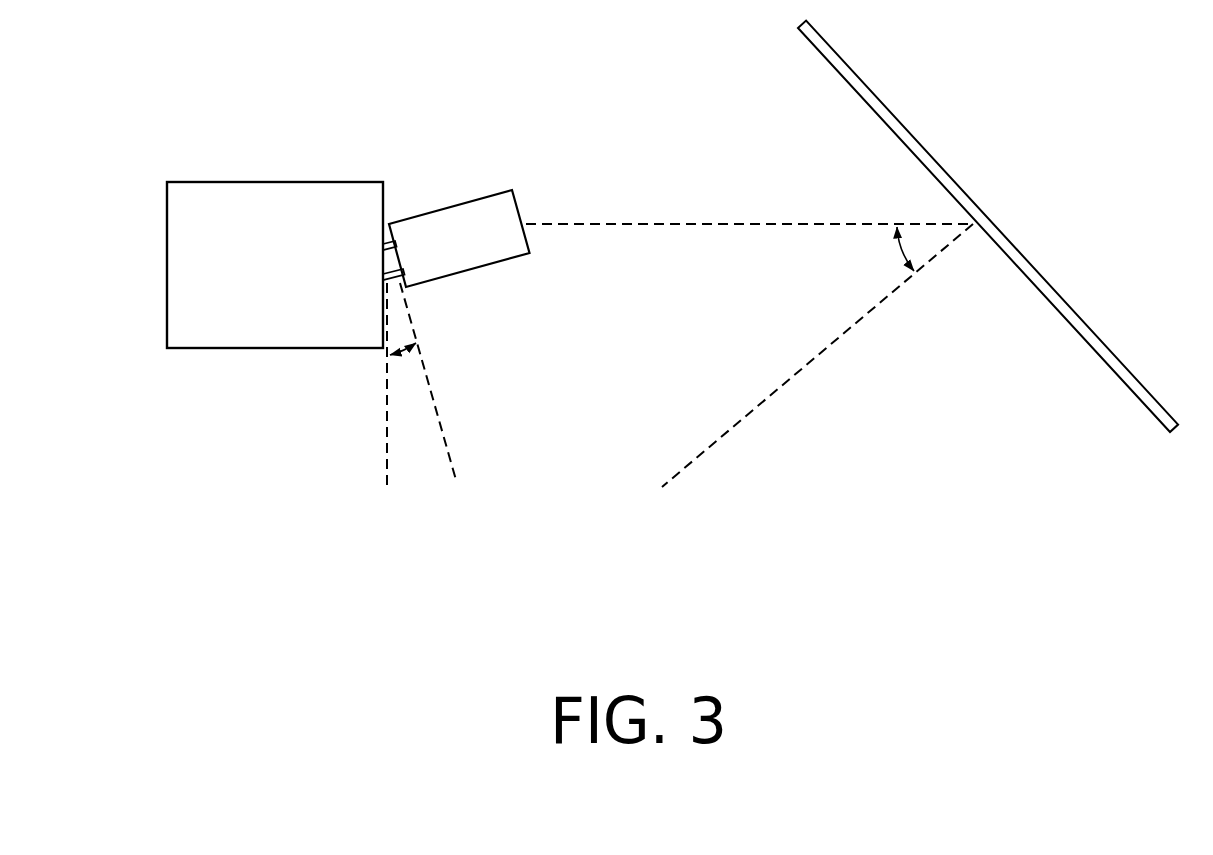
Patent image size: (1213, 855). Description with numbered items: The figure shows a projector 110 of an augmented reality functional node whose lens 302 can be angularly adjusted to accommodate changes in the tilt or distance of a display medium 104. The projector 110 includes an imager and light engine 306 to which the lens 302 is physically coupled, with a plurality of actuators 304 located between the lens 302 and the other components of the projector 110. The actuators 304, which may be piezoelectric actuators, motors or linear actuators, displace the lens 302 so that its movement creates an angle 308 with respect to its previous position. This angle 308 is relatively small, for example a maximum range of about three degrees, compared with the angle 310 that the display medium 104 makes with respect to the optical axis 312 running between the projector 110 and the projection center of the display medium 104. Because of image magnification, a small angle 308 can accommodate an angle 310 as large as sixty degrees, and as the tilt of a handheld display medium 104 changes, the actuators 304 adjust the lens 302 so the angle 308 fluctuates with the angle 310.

The display medium 104 is at (909, 121).
The projector 110 is at (341, 368).
The lens 302 is at (460, 198).
The actuators 304 is at (402, 283).
The imager and light engine 306 is at (195, 176).
The angle 308 is at (411, 362).
The angle 310 is at (893, 260).
The optical axis 312 is at (671, 220).